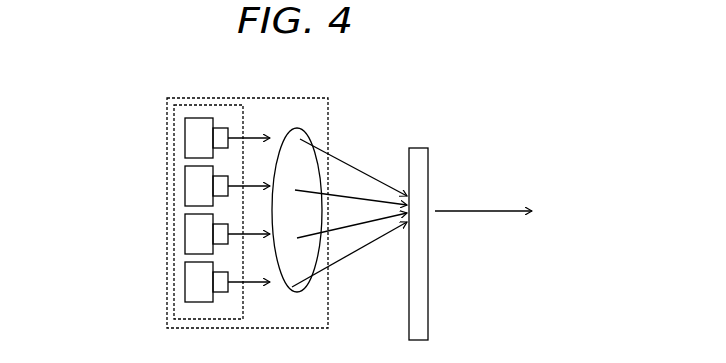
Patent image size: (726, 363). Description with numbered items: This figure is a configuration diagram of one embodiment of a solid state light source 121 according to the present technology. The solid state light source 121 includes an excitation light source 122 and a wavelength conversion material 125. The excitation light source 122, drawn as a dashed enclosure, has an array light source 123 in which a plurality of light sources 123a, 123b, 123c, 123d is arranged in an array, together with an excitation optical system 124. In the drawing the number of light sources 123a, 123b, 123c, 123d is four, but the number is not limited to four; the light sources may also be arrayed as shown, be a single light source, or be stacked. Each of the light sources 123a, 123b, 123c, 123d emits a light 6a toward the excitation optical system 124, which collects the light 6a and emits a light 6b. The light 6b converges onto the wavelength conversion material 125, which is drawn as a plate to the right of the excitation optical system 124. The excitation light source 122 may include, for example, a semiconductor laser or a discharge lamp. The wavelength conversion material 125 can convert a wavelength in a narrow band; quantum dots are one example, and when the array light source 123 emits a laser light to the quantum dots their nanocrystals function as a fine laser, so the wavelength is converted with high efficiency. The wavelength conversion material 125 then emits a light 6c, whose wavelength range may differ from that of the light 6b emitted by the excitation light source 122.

The solid state light source 121 is at (160, 78).
The excitation light source 122 is at (290, 329).
The array light source 123 is at (220, 320).
The light source 123a is at (184, 140).
The light source 123b is at (184, 195).
The light source 123c is at (184, 238).
The light source 123d is at (184, 286).
The excitation optical system 124 is at (308, 133).
The wavelength conversion material 125 is at (429, 294).
The light 6a is at (257, 119).
The light 6b is at (367, 160).
The light 6c is at (455, 191).